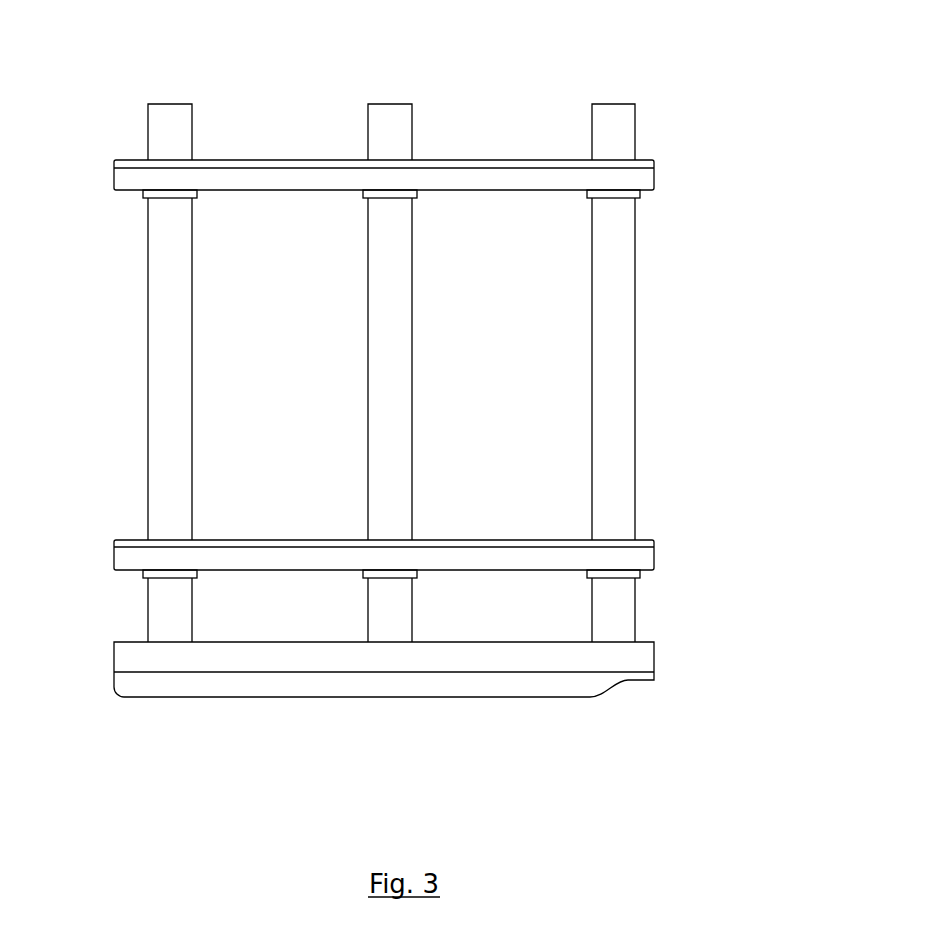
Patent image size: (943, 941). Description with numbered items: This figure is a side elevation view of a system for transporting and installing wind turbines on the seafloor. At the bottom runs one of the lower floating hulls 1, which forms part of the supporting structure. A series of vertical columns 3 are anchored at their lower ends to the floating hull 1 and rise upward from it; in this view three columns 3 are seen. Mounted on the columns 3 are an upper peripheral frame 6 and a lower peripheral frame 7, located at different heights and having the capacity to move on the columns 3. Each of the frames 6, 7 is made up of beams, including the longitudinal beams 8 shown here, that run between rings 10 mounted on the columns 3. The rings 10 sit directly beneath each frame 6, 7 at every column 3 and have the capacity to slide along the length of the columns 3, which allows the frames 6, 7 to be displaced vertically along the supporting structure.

The floating hull 1 is at (228, 682).
The vertical column 3 is at (396, 104).
The upper peripheral frame 6 is at (662, 172).
The lower peripheral frame 7 is at (669, 556).
The longitudinal beam 8 is at (513, 178).
The ring 10 is at (148, 199).